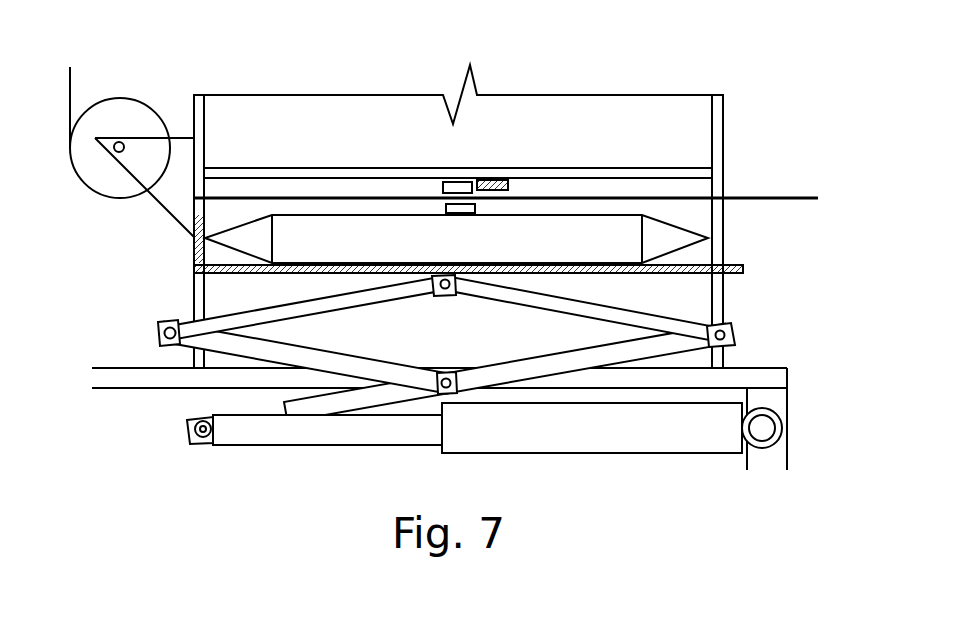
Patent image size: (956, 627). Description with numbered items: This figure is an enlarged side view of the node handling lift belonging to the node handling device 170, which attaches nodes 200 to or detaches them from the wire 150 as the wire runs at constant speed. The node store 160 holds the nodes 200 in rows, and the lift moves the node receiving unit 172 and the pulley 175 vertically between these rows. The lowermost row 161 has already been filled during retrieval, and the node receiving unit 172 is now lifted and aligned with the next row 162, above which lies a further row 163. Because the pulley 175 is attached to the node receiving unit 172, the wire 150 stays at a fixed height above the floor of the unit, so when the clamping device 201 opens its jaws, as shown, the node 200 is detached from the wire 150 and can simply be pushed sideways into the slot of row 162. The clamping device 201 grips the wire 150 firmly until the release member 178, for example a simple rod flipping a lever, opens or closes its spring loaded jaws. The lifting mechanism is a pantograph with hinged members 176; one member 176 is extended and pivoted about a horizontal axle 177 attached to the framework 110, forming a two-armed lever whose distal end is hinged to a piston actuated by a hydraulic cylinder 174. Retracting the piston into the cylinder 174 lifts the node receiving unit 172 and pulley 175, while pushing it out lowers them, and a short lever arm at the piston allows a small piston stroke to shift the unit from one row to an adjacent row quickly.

The framework 110 is at (127, 380).
The wire 150 is at (803, 198).
The node store 160 is at (642, 149).
The lowermost row 161 is at (695, 296).
The row 162 is at (695, 212).
The row 163 is at (693, 133).
The node handling device 170 is at (401, 324).
The node receiving unit 172 is at (715, 263).
The hydraulic cylinder 174 is at (507, 441).
The pulley 175 is at (120, 118).
The hinged members 176 is at (328, 307).
The horizontal axle 177 is at (447, 372).
The release member 178 is at (492, 180).
The node 200 is at (352, 252).
The clamping device 201 is at (458, 182).